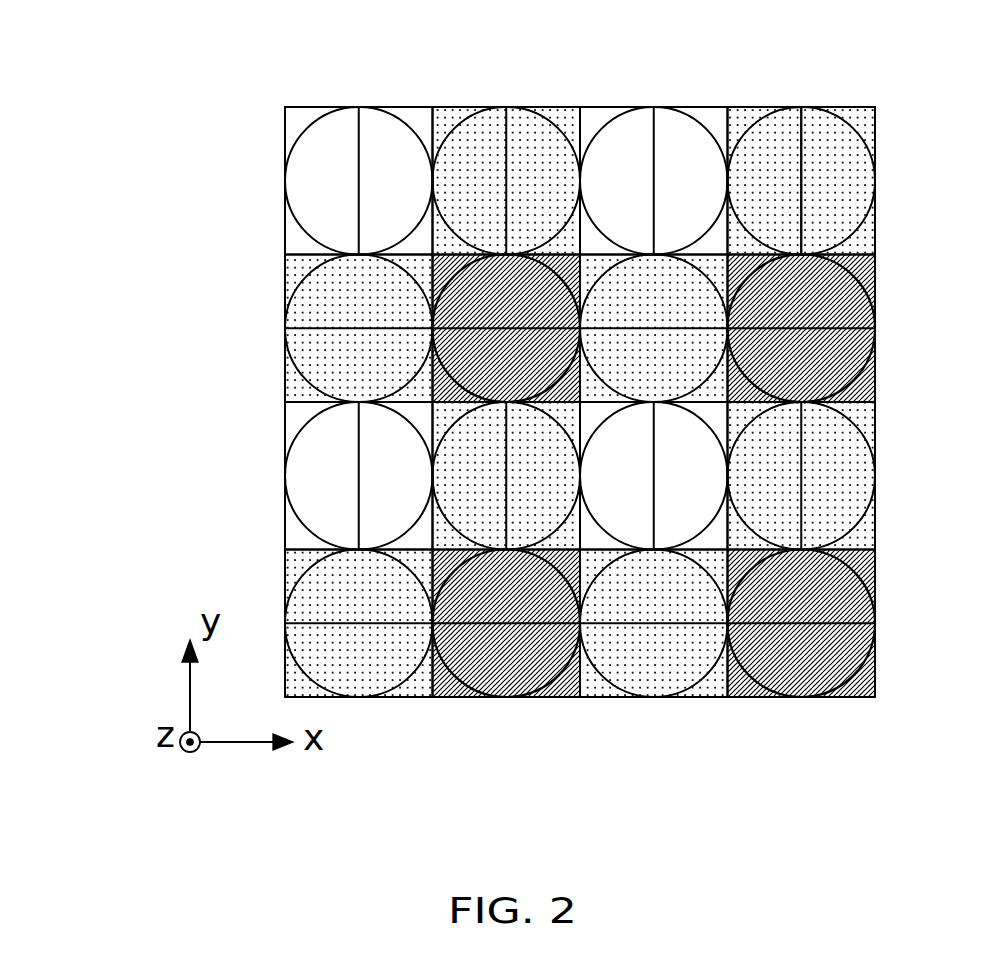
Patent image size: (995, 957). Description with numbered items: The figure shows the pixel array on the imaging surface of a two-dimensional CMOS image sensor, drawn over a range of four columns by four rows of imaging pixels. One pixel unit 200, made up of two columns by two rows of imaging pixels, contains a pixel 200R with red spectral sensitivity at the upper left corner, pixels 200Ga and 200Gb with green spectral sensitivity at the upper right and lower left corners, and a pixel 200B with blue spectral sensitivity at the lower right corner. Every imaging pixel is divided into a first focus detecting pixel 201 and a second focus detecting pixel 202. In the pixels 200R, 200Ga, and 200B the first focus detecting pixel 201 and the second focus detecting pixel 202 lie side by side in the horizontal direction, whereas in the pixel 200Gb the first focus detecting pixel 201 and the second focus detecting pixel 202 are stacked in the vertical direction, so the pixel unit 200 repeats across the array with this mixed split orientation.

The pixel unit 200 is at (137, 135).
The pixel with spectral sensitivity of R 200R is at (323, 152).
The pixel with spectral sensitivity of G 200Ga is at (465, 202).
The pixel with spectral sensitivity of G 200Gb is at (327, 300).
The pixel with spectral sensitivity of B 200B is at (483, 368).
The first focus detecting pixel 201 is at (755, 140).
The second focus detecting pixel 202 is at (828, 145).